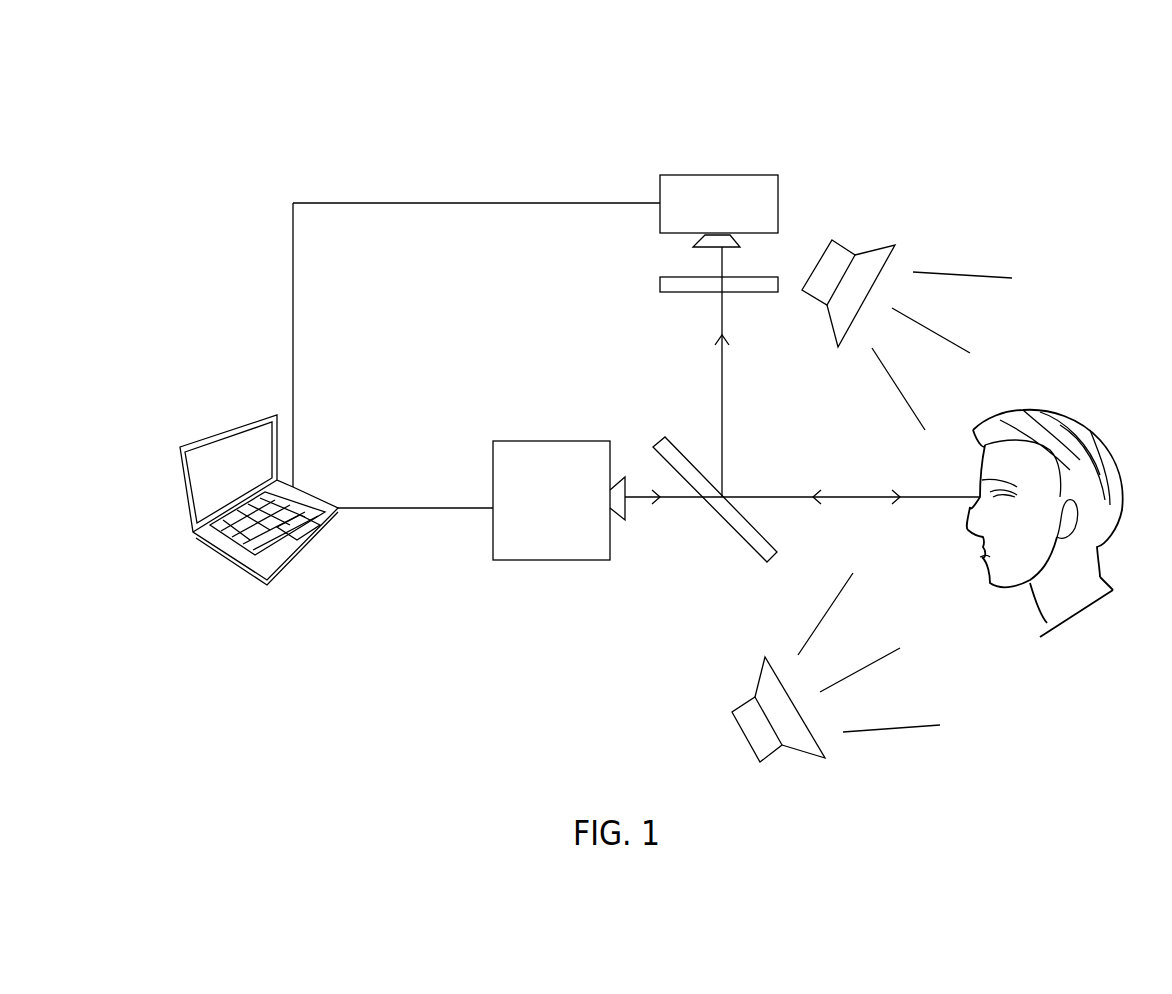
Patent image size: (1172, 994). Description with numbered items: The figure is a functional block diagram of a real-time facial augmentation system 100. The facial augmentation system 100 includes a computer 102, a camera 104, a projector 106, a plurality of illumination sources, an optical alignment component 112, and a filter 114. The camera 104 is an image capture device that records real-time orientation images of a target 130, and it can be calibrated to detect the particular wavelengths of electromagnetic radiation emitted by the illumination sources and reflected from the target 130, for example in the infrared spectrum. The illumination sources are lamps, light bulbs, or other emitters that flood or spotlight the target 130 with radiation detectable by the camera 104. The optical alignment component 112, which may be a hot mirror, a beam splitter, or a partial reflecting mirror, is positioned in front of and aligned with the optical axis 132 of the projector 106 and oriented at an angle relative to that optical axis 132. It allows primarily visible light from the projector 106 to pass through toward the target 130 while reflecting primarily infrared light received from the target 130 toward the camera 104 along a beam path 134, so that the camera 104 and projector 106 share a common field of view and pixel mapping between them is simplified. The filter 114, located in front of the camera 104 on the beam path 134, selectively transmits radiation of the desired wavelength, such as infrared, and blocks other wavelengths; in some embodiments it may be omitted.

The facial augmentation system 100 is at (247, 158).
The computer 102 is at (223, 430).
The camera 104 is at (725, 173).
The projector 106 is at (550, 437).
The optical alignment component 112 is at (665, 437).
The filter 114 is at (660, 277).
The target 130 is at (963, 522).
The optical axis 132 is at (682, 497).
The beam path 134 is at (722, 395).